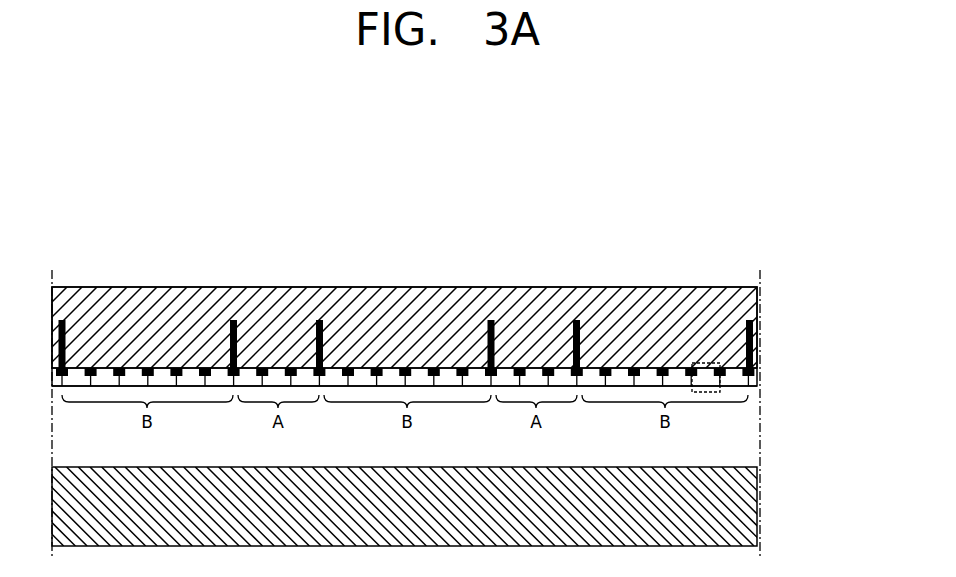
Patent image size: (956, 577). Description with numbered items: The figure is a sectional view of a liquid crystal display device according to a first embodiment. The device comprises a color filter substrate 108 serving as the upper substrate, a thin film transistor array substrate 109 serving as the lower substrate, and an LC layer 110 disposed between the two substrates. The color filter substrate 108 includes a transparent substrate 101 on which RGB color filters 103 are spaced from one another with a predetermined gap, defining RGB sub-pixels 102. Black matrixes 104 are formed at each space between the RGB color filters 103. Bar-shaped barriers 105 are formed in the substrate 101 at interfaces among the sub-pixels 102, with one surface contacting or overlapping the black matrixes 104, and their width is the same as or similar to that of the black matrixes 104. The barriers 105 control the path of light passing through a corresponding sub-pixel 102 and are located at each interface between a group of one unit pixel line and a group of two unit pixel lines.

The substrate 101 is at (745, 296).
The RGB sub-pixel 102 is at (706, 362).
The RGB color filter 103 is at (757, 384).
The black matrix 104 is at (757, 370).
The barrier 105 is at (754, 335).
The color filter substrate 108 is at (818, 291).
The thin film transistor array substrate 109 is at (766, 467).
The LC layer 110 is at (766, 386).